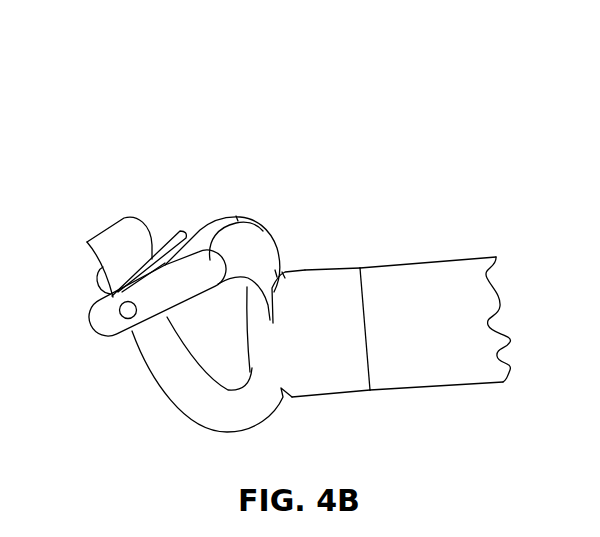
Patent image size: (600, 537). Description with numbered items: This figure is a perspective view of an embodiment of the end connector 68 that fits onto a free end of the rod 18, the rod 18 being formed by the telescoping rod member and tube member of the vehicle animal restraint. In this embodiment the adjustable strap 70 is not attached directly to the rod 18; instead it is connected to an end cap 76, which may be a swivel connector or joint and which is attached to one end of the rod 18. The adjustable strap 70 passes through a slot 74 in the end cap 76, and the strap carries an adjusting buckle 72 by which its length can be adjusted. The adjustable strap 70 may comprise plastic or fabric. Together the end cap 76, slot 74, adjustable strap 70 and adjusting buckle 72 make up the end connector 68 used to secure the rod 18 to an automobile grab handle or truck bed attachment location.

The end connector 68 is at (197, 207).
The adjustable strap 70 is at (250, 243).
The adjusting buckle 72 is at (165, 301).
The slot 74 is at (278, 283).
The end cap 76 is at (287, 352).
The rod 18 is at (403, 325).